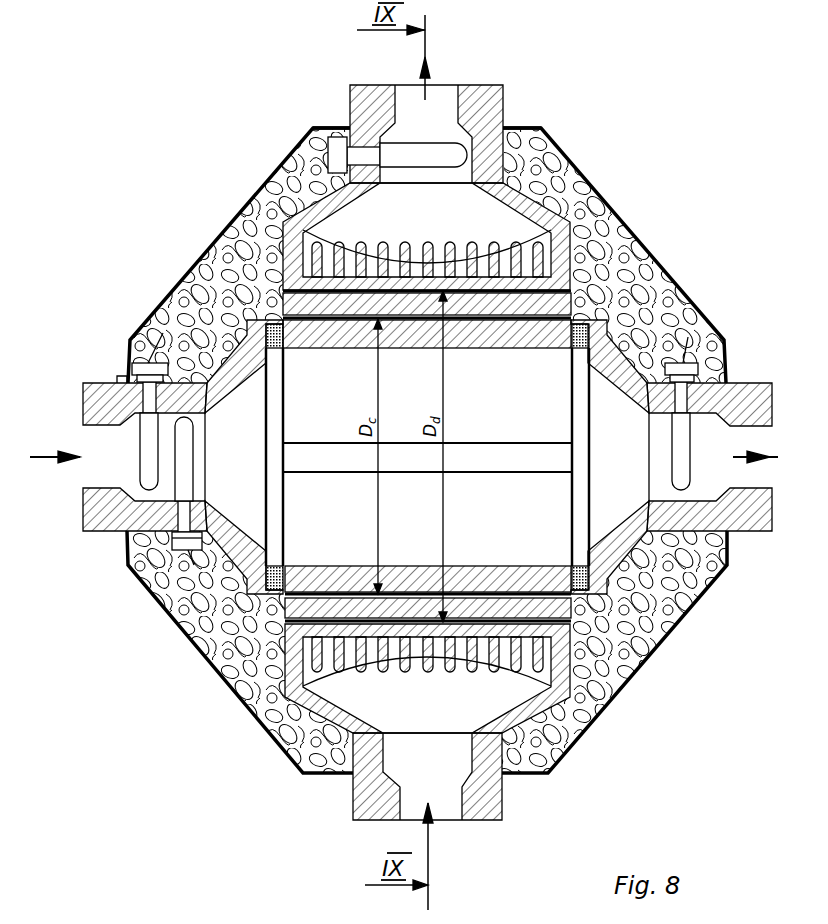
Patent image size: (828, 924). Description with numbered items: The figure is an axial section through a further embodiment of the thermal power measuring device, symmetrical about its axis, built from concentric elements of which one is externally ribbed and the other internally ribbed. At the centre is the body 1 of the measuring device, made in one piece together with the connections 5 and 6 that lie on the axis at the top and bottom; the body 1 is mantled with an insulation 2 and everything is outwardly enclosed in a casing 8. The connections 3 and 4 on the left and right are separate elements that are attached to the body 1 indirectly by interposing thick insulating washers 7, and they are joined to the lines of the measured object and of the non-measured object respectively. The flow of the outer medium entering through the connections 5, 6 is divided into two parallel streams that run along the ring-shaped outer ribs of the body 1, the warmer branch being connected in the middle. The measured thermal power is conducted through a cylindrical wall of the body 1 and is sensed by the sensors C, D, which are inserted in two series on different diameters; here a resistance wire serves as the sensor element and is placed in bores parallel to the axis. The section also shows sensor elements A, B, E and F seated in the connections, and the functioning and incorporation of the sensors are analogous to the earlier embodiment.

The body 1 is at (217, 232).
The insulation 2 is at (313, 131).
The connection 3 is at (97, 383).
The connection 4 is at (760, 517).
The connection 5 is at (490, 808).
The connection 6 is at (352, 96).
The insulating washer 7 is at (262, 317).
The casing 8 is at (270, 175).
The temperature sensor A is at (145, 455).
The temperature sensor B is at (682, 462).
The sensor C is at (590, 305).
The sensor D is at (577, 292).
The heating element E is at (183, 470).
The temperature sensor F is at (408, 153).